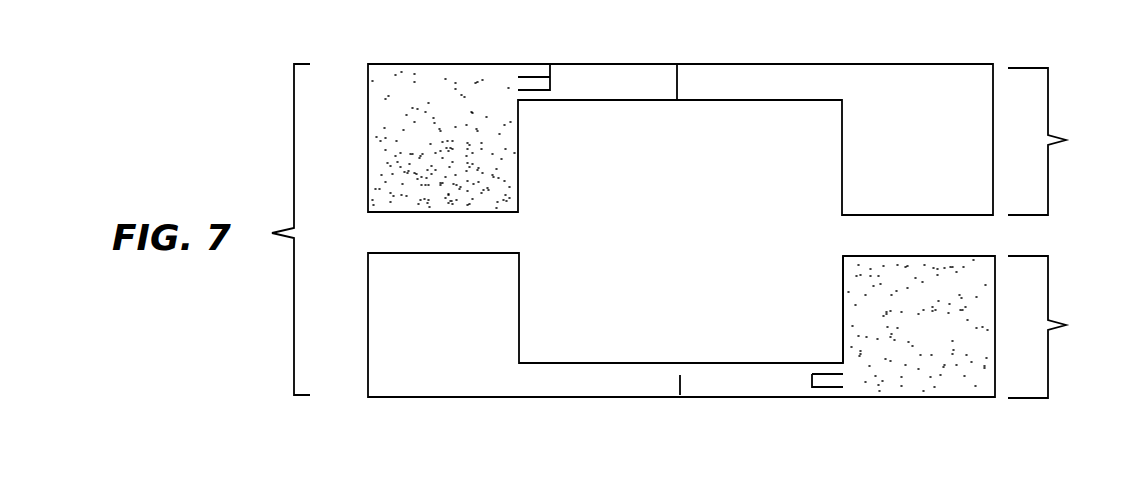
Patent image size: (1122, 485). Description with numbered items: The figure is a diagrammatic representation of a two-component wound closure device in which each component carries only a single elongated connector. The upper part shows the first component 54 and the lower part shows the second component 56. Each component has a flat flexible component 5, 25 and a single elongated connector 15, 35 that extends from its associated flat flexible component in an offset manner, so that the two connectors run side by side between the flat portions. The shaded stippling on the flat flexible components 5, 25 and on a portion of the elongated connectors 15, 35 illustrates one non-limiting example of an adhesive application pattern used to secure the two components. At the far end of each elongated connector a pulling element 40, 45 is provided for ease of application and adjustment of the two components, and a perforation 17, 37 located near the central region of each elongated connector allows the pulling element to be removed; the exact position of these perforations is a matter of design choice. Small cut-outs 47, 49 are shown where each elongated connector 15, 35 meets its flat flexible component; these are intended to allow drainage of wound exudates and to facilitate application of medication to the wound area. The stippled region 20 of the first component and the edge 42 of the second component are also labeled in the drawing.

The flat flexible component 5 is at (438, 80).
The elongated connector 15 is at (612, 80).
The perforation 17 is at (680, 80).
The stippled contact region 20 is at (518, 168).
The flat flexible component 25 is at (923, 385).
The elongated connector 35 is at (742, 385).
The perforation 37 is at (680, 380).
The pulling element 40 is at (912, 80).
The second pad edge 42 is at (841, 306).
The pulling element 45 is at (438, 380).
The cut-out 47 is at (533, 78).
The cut-out 49 is at (822, 388).
The first component 54 is at (1055, 141).
The second component 56 is at (1055, 327).